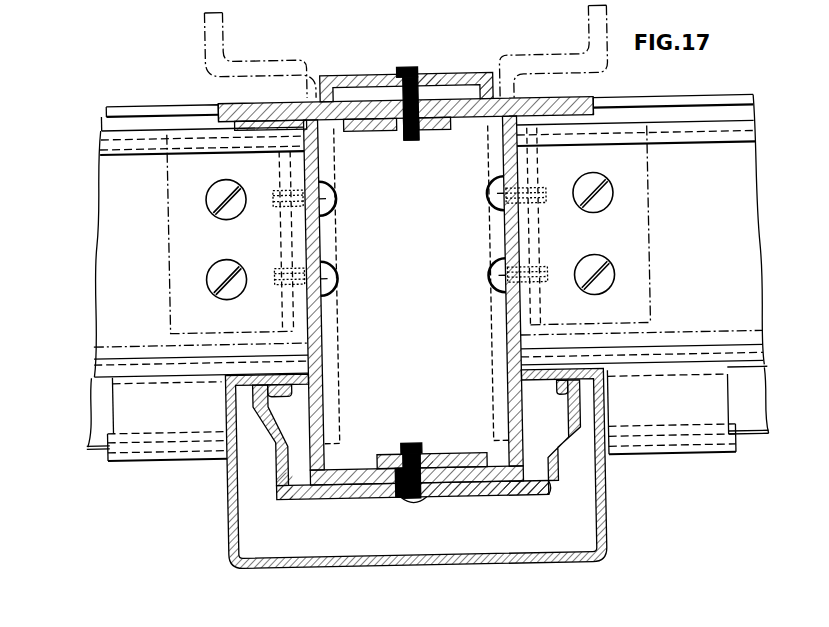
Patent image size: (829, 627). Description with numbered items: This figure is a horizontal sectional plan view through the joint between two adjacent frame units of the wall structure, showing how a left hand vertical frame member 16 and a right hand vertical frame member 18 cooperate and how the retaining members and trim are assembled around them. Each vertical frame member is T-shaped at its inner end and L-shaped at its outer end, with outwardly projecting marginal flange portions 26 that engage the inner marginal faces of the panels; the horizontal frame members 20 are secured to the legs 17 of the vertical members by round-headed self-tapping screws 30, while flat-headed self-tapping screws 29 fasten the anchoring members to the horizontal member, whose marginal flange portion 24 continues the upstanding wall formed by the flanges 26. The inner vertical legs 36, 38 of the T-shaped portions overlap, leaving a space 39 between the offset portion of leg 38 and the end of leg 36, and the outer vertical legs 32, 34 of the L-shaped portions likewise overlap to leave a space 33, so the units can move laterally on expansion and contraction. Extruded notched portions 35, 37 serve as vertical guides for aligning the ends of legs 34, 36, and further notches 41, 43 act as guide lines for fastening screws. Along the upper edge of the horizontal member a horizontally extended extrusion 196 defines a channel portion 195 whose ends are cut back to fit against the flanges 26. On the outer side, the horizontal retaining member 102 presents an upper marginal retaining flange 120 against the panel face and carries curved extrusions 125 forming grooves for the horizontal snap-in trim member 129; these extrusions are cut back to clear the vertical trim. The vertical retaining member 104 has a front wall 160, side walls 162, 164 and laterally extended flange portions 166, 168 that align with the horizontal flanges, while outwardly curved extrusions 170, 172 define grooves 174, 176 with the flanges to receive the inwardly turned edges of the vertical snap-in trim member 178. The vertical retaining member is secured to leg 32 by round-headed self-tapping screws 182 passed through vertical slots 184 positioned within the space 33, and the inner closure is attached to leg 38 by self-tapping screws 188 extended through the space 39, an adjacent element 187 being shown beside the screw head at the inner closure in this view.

The left hand vertical frame member 16 is at (533, 97).
The legs of the vertical frame members 17 is at (320, 337).
The right hand vertical frame member 18 is at (288, 100).
The horizontal frame member 20 is at (755, 288).
The marginal flange portion 24 is at (157, 155).
The marginal flange portion 26 is at (240, 117).
The flat-headed self-tapping screws 29 is at (215, 265).
The round-headed self-tapping screws 30 is at (327, 267).
The outer vertical leg 32 is at (480, 457).
The space 33 is at (405, 443).
The outer vertical leg 34 is at (472, 483).
The extruded notched portion 35 is at (420, 458).
The inner vertical leg 36 is at (363, 127).
The extruded notched portion 37 is at (387, 127).
The inner vertical leg 38 is at (428, 127).
The space 39 is at (473, 70).
The guide line notch 41 is at (390, 457).
The guide line notch 43 is at (390, 100).
The horizontal retaining member 102 is at (82, 412).
The vertical retaining member 104 is at (535, 495).
The upper marginal retaining flange 120 is at (150, 357).
The curved extrusions 125 is at (90, 447).
The horizontal snap-in trim member 129 is at (185, 462).
The front wall 160 is at (340, 497).
The side wall 162 is at (278, 467).
The side wall 164 is at (557, 472).
The laterally extended flange portion 166 is at (228, 365).
The laterally extended flange portion 168 is at (597, 353).
The outwardly curved extrusion 170 is at (255, 407).
The outwardly curved extrusion 172 is at (560, 427).
The groove 174 is at (285, 388).
The groove 176 is at (557, 380).
The vertical snap-in trim member 178 is at (513, 560).
The self-tapping round-headed screws 182 is at (420, 500).
The vertical slots 184 is at (397, 497).
The cap bar 187 is at (440, 72).
The self-tapping screws 188 is at (413, 72).
The channel portion 195 is at (138, 118).
The horizontally extended extrusion 196 is at (178, 107).